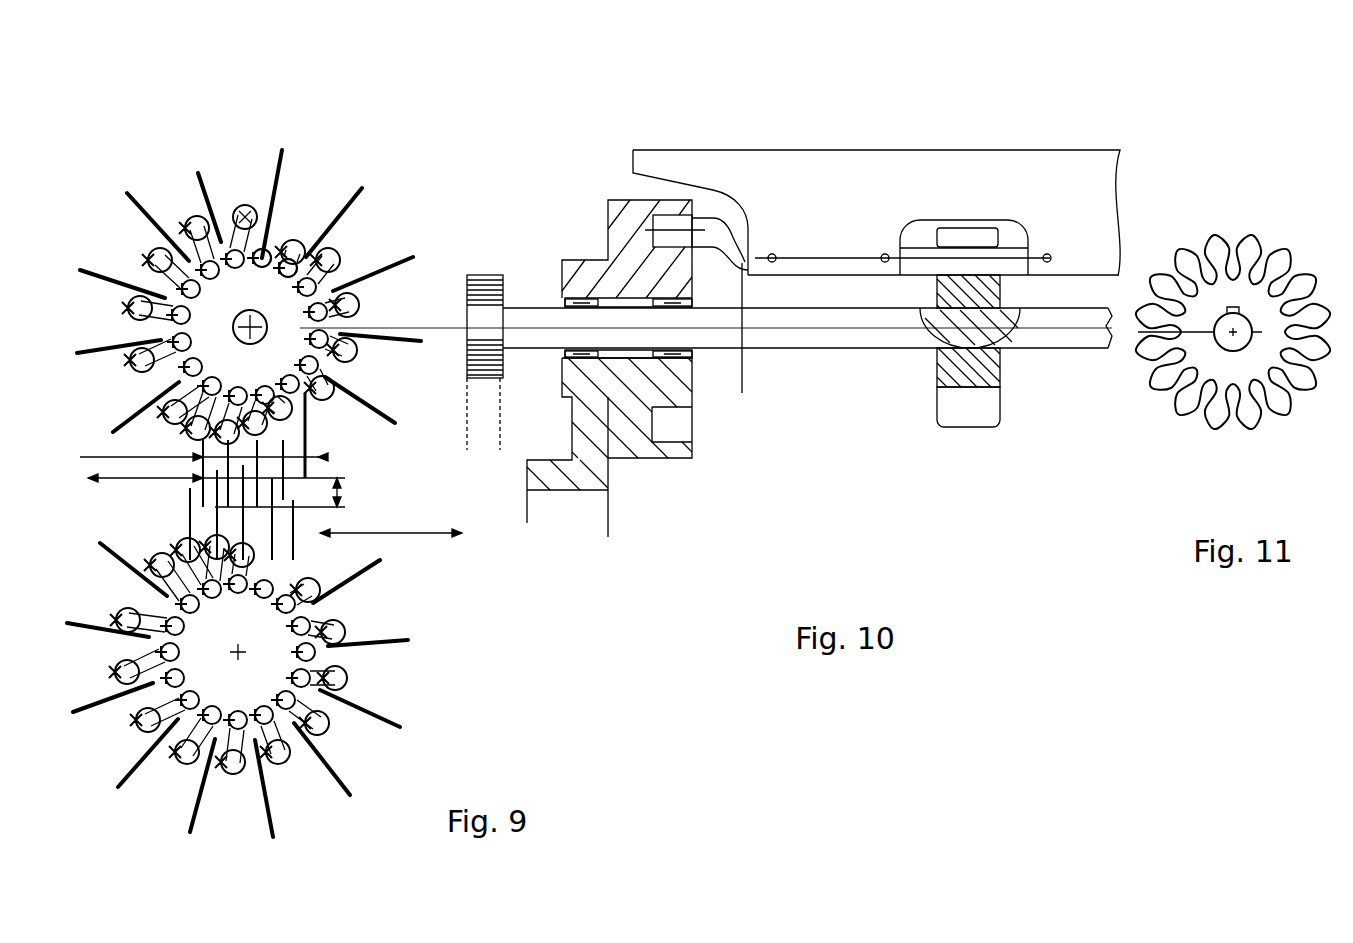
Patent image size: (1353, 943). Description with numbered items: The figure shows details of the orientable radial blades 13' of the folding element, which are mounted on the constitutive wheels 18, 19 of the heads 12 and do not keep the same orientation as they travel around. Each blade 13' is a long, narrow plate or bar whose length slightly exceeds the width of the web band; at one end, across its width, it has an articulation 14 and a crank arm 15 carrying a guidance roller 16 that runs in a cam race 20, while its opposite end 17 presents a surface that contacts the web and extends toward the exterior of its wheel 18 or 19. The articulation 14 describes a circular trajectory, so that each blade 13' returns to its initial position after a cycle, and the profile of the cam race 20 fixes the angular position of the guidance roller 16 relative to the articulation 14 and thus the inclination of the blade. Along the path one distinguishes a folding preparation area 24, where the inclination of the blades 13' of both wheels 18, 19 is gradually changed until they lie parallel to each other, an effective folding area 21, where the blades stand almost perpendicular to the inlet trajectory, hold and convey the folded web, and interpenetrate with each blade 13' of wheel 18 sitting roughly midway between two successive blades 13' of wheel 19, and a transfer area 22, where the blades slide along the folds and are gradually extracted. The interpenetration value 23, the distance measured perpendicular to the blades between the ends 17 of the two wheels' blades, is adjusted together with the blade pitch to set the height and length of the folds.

In FIG. 9, the head 12 is at (378, 225).
In FIG. 9, the orientable radial blade 13' is at (291, 505).
In FIG. 10, the orientable radial blade 13' is at (933, 234).
In FIG. 9, the articulation 14 is at (238, 210).
In FIG. 10, the articulation 14 is at (1003, 262).
In FIG. 9, the crank arm 15 is at (262, 256).
In FIG. 10, the crank arm 15 is at (735, 345).
In FIG. 9, the guidance roller 16 is at (292, 262).
In FIG. 10, the guidance roller 16 is at (665, 215).
In FIG. 9, the blade end 17 is at (285, 148).
In FIG. 10, the blade end 17 is at (690, 148).
In FIG. 9, the wheel 18 is at (218, 306).
In FIG. 10, the wheel 18 is at (1010, 275).
In FIG. 11, the wheel 18 is at (1290, 346).
In FIG. 9, the wheel 19 is at (200, 646).
In FIG. 10, the cam race 20 is at (655, 243).
In FIG. 9, the effective folding area 21 is at (204, 446).
In FIG. 9, the transfer area 22 is at (391, 521).
In FIG. 9, the interpenetration value 23 is at (300, 491).
In FIG. 9, the folding preparation area 24 is at (216, 491).